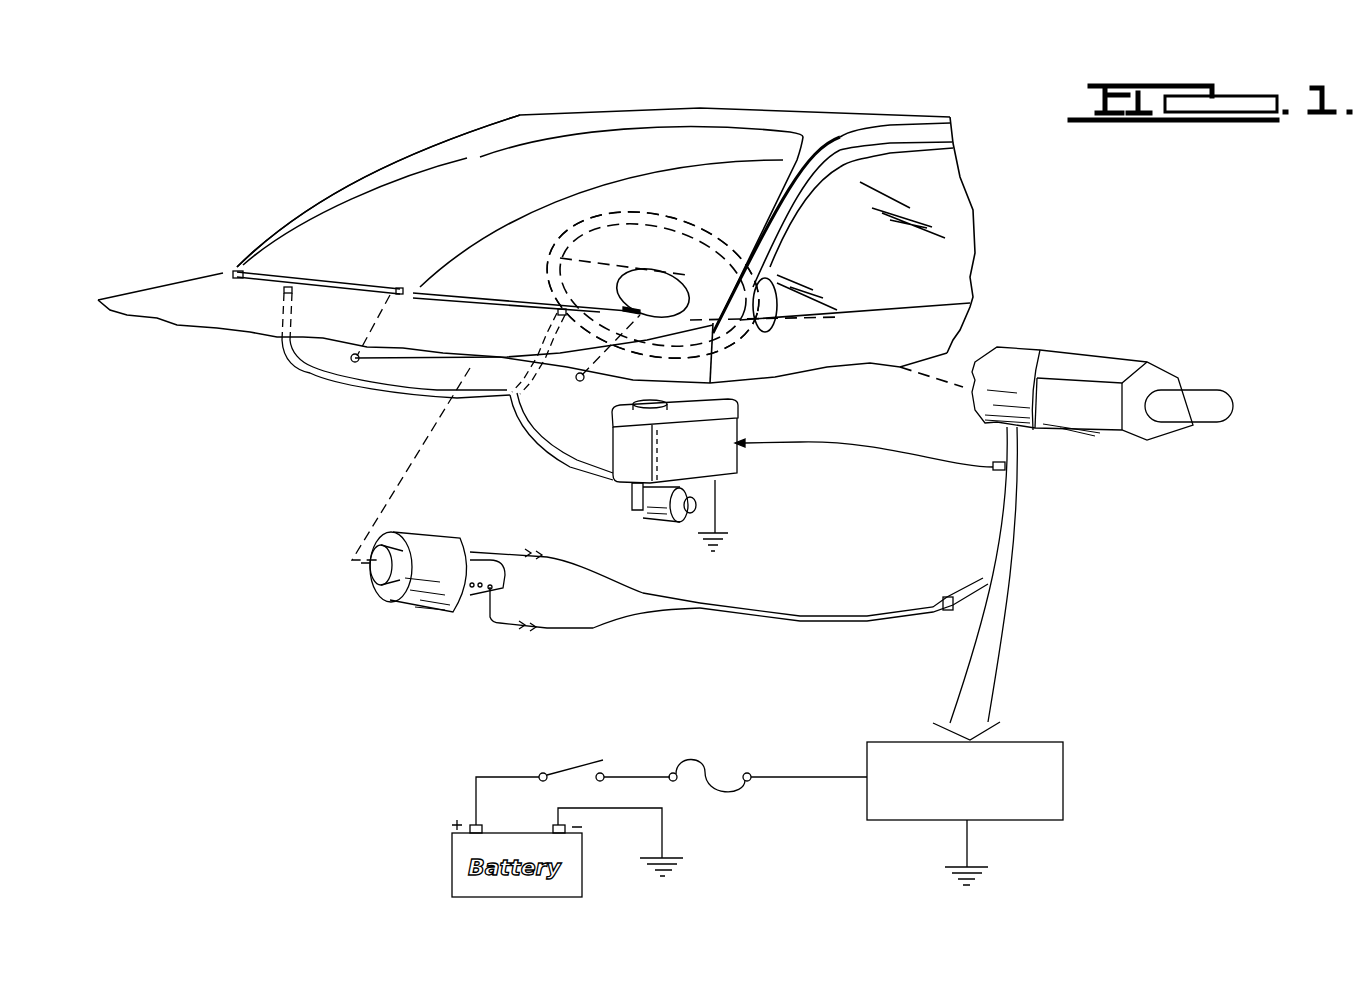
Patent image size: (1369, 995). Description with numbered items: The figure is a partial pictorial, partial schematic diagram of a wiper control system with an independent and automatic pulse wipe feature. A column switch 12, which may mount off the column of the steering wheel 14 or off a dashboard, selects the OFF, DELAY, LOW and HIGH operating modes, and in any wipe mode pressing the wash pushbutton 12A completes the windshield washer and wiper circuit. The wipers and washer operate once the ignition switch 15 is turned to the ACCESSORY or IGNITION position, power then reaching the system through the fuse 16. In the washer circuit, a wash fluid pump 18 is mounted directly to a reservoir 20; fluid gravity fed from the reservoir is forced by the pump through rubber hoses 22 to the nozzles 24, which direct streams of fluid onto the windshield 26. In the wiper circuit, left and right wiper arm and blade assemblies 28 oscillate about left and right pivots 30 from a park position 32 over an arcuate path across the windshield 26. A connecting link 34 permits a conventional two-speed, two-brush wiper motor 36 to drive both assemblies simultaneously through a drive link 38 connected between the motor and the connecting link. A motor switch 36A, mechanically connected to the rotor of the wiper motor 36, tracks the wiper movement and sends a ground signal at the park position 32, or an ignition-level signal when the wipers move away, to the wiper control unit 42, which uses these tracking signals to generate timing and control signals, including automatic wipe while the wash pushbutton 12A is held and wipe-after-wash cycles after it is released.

The column switch 12 is at (1077, 355).
The wash pushbutton 12A is at (1208, 423).
The steering wheel 14 is at (682, 228).
The ignition switch 15 is at (570, 767).
The fuse 16 is at (703, 757).
The wash fluid pump 18 is at (663, 516).
The reservoir 20 is at (720, 398).
The rubber hoses 22 is at (527, 392).
The nozzles 24 is at (293, 287).
The windshield 26 is at (387, 172).
The wiper arm and blade assemblies 28 is at (380, 325).
The pivots 30 is at (351, 358).
The park position 32 is at (248, 278).
The connecting link 34 is at (440, 412).
The wiper motor 36 is at (438, 537).
The motor switch 36A is at (477, 597).
The drive link 38 is at (380, 507).
The wiper control unit 42 is at (1063, 773).